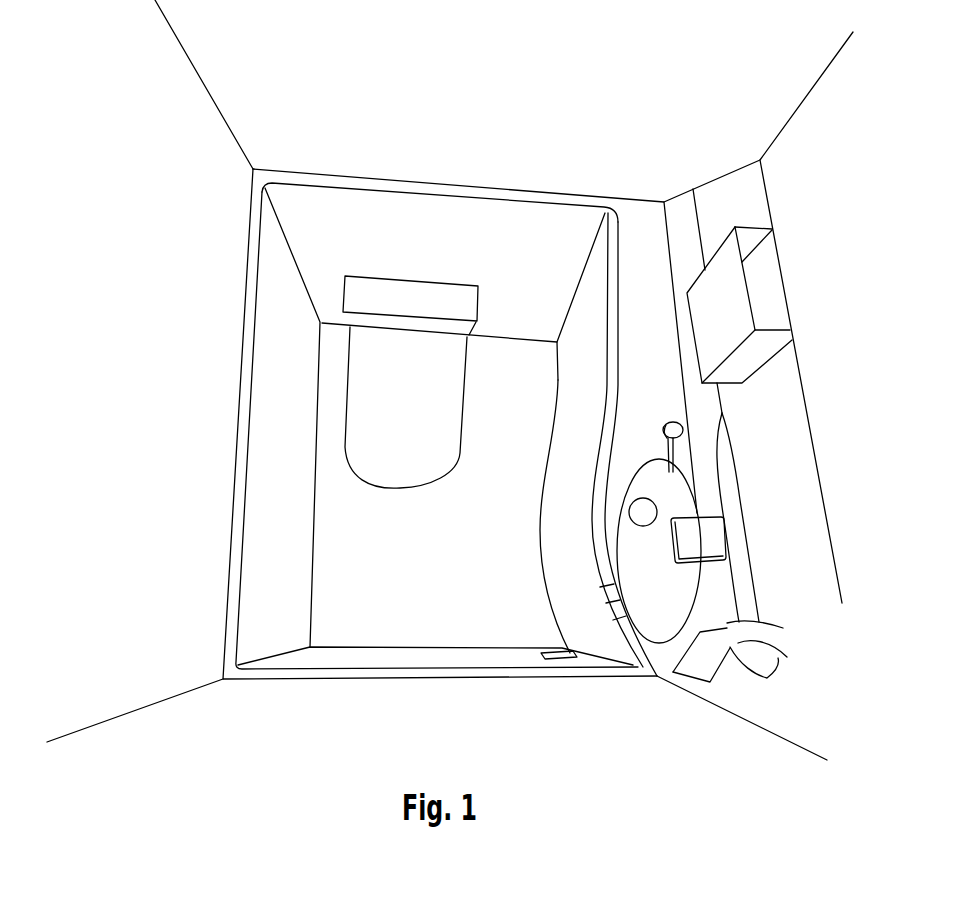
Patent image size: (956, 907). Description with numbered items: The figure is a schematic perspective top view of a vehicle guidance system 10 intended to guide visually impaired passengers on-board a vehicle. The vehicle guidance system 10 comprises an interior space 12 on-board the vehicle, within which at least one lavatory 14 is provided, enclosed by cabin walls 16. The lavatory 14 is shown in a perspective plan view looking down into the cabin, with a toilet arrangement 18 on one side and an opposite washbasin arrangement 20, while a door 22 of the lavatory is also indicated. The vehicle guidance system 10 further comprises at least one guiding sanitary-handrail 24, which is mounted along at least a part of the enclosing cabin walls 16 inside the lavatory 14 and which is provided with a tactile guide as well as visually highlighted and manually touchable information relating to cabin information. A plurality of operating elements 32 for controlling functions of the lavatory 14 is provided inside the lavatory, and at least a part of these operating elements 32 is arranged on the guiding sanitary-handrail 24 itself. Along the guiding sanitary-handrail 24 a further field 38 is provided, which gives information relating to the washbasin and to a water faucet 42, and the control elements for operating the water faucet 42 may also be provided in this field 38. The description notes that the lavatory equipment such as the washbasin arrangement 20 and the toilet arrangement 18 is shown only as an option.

The vehicle guidance system 10 is at (183, 408).
The interior space 12 is at (200, 274).
The lavatory 14 is at (455, 527).
The enclosing cabin walls 16 is at (187, 528).
The toilet arrangement 18 is at (400, 467).
The washbasin arrangement 20 is at (622, 528).
The door 22 is at (427, 640).
The guiding sanitary-handrail 24 is at (605, 570).
The operating elements 32 is at (597, 636).
The further field 38 is at (612, 608).
The water faucet 42 is at (705, 547).